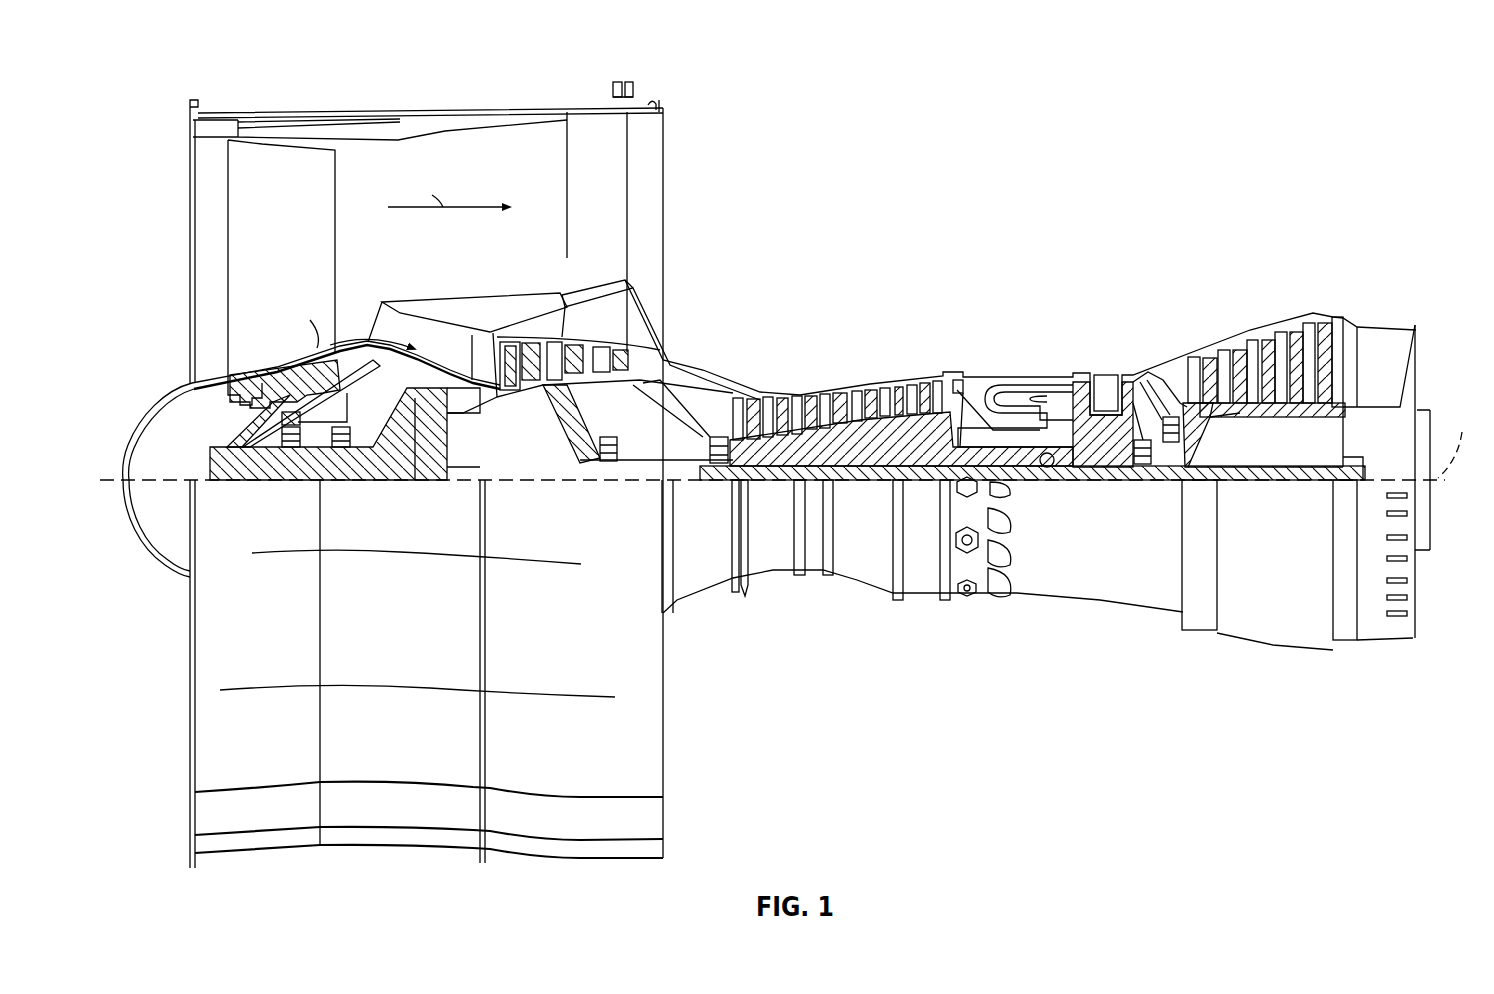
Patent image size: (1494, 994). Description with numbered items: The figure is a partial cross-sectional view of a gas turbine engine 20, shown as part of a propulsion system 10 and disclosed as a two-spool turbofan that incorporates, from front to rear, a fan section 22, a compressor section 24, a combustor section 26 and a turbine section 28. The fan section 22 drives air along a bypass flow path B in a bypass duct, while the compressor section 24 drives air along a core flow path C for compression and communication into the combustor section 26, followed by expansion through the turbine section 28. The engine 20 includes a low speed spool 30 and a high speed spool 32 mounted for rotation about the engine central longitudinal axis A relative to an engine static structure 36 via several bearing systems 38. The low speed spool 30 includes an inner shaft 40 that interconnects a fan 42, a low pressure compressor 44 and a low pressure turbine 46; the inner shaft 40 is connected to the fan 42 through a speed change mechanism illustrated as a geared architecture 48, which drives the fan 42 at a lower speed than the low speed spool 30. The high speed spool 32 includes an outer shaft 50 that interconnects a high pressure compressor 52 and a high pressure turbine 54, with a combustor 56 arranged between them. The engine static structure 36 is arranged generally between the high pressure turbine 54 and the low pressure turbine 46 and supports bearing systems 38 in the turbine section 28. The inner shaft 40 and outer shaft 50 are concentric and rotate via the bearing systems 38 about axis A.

The propulsion system 10 is at (518, 62).
The gas turbine engine 20 is at (1238, 150).
The fan section 22 is at (343, 97).
The compressor section 24 is at (854, 337).
The combustor section 26 is at (999, 318).
The turbine section 28 is at (1142, 276).
The low speed spool 30 is at (887, 484).
The high speed spool 32 is at (955, 428).
The engine static structure 36 is at (925, 602).
The bearing systems 38 is at (295, 430).
The inner shaft 40 is at (677, 473).
The fan 42 is at (310, 235).
The low pressure compressor 44 is at (578, 358).
The low pressure turbine 46 is at (1270, 335).
The geared architecture 48 is at (425, 457).
The outer shaft 50 is at (1048, 474).
The high pressure compressor 52 is at (845, 445).
The high pressure turbine 54 is at (1105, 375).
The combustor 56 is at (1028, 397).